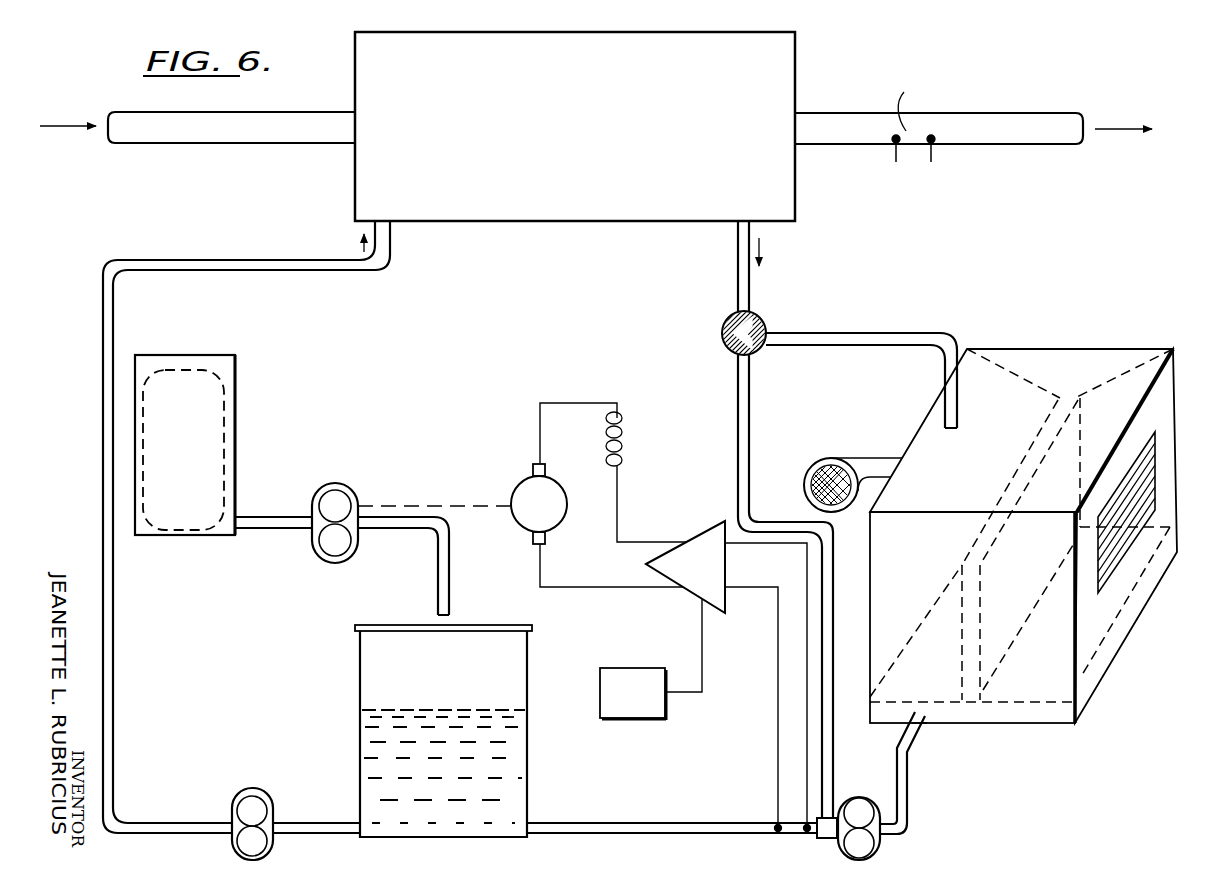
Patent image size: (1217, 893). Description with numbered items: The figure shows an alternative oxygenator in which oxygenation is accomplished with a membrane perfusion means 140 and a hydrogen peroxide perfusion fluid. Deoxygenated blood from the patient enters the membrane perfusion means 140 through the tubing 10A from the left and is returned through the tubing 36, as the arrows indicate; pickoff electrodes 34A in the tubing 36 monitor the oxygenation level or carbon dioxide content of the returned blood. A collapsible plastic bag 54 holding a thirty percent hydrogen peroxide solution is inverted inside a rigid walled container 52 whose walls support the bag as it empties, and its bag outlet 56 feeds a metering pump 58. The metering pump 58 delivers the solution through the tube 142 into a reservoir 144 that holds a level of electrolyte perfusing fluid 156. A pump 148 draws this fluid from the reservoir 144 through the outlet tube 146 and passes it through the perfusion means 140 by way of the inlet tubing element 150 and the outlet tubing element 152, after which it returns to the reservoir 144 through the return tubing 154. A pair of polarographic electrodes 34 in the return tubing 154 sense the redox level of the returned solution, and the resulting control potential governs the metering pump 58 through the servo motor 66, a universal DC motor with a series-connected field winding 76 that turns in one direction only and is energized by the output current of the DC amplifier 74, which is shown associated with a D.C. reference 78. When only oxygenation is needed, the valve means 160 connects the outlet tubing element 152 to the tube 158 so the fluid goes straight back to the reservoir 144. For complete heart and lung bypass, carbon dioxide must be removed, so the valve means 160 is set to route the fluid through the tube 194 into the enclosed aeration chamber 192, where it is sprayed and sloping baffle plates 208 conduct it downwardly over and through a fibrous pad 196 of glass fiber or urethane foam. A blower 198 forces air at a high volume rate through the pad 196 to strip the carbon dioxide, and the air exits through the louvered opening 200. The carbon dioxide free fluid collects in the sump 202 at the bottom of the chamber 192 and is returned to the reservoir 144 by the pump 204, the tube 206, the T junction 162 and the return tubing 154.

The tubing 10A is at (187, 147).
The membrane perfusion means 140 is at (556, 222).
The tubing 36 is at (1030, 146).
The pickoff electrodes 34A is at (906, 144).
The perfusion fluid outlet tubing element 152 is at (737, 283).
The valve means 160 is at (721, 341).
The perfusion fluid inlet tubing element 150 is at (104, 312).
The pump 148 is at (236, 797).
The outlet tube 146 is at (333, 823).
The reservoir 144 is at (360, 680).
The perfusing fluid 156 is at (372, 712).
The perfusion fluid return tubing 154 is at (575, 823).
The T junction 162 is at (820, 840).
The polarographic electrodes 34 is at (793, 824).
The rigid walled container 52 is at (237, 376).
The collapsible plastic bag 54 is at (210, 449).
The bag outlet 56 is at (282, 532).
The metering pump 58 is at (336, 489).
The tube 142 is at (438, 594).
The servo motor 66 is at (517, 488).
The series-connected field winding 76 is at (625, 455).
The DC amplifier 74 is at (705, 540).
The D.C. reference 78 is at (618, 719).
The tube 158 is at (746, 497).
The tube 194 is at (836, 333).
The blower 198 is at (822, 464).
The aeration chamber 192 is at (1172, 382).
The sloping baffle plates 208 is at (1113, 380).
The fibrous pad 196 is at (993, 647).
The louvered opening 200 is at (1118, 542).
The sump 202 is at (958, 713).
The tube 206 is at (898, 802).
The pump 204 is at (882, 851).